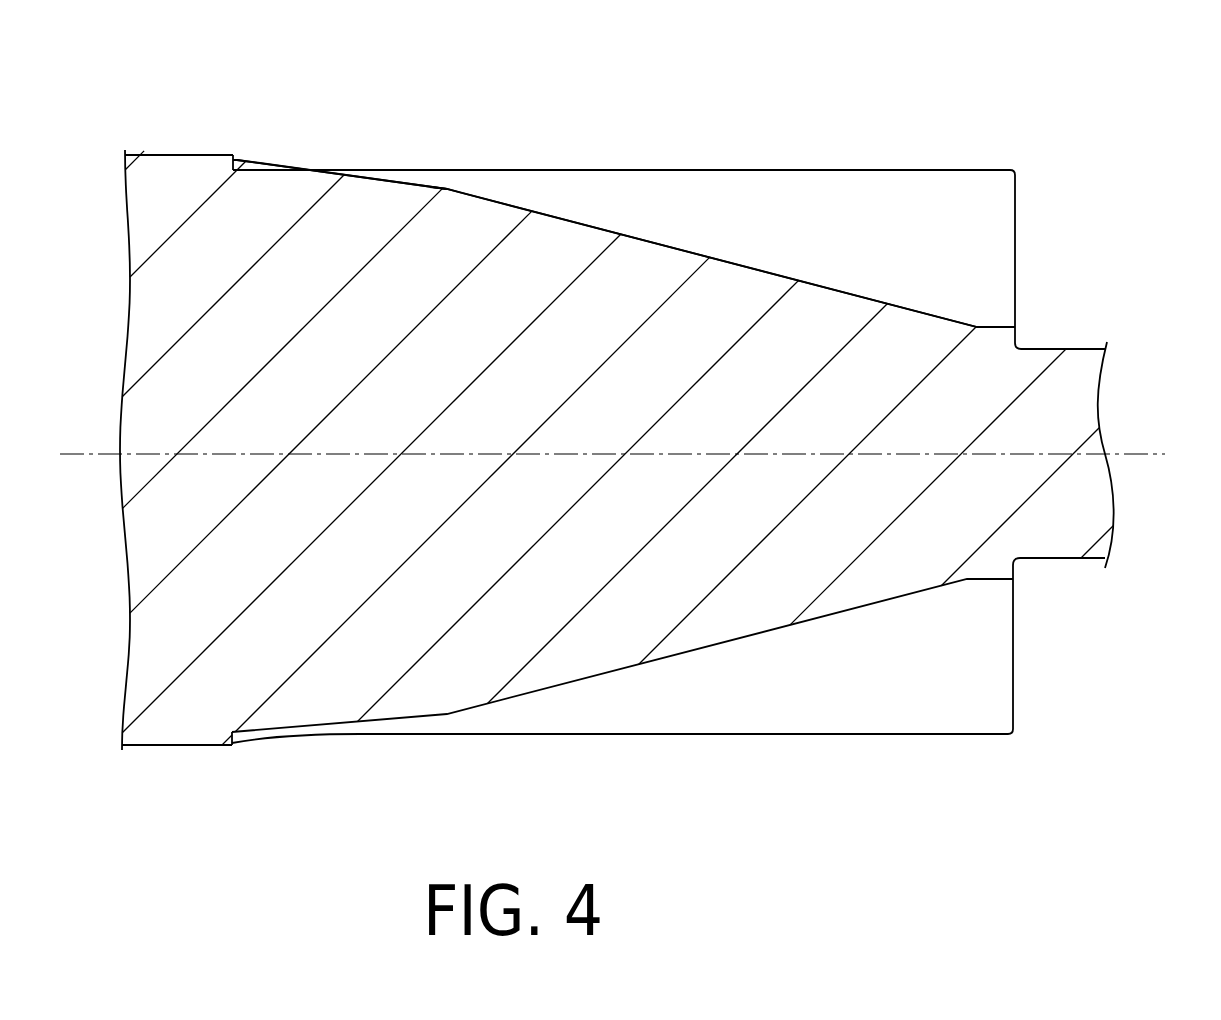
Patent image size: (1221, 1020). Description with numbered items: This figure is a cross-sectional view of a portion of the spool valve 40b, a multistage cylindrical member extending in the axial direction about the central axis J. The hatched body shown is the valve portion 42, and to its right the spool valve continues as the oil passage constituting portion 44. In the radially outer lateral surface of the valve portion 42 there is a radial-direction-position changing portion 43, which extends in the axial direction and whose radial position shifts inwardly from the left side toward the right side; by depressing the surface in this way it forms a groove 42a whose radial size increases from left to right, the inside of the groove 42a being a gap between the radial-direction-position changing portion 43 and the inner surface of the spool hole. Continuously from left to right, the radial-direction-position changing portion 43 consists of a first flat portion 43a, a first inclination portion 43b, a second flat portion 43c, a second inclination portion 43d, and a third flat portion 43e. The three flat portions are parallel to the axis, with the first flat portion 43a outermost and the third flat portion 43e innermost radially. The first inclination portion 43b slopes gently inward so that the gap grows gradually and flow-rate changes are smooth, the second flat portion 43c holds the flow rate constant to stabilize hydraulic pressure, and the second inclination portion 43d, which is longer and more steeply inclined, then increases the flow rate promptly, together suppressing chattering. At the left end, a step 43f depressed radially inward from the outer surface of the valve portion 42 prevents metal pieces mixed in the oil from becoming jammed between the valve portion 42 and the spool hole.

The spool valve 40b is at (1072, 96).
The valve portion 42 is at (173, 203).
The groove 42a is at (588, 190).
The radial-direction-position changing portion 43 is at (765, 232).
The first flat portion 43a is at (247, 160).
The first inclination portion 43b is at (322, 172).
The second flat portion 43c is at (432, 190).
The second inclination portion 43d is at (653, 240).
The third flat portion 43e is at (995, 327).
The step 43f is at (240, 147).
The oil passage constituting portion 44 is at (1067, 358).
The central axis J is at (1140, 455).